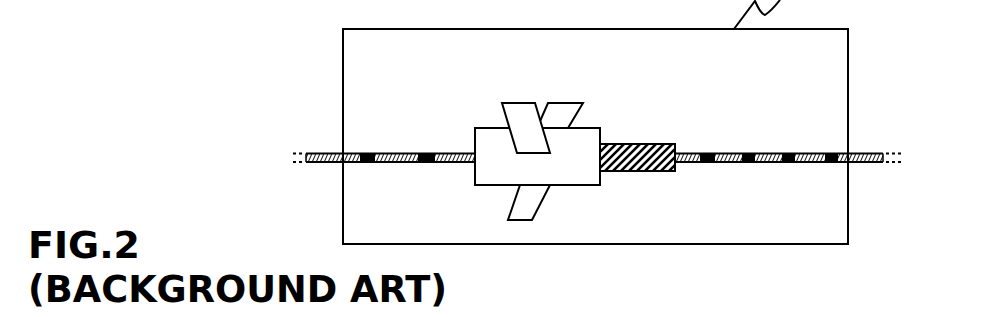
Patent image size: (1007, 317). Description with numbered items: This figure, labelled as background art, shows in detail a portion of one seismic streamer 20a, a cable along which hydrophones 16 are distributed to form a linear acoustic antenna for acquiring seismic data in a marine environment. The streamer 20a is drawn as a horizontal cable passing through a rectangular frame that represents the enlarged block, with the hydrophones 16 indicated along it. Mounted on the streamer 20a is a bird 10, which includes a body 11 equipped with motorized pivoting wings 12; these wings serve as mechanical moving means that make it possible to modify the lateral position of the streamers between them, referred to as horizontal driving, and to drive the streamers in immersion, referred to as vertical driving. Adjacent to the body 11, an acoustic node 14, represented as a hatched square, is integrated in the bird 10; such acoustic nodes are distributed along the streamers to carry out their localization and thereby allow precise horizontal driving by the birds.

The bird 10 is at (542, 96).
The body 11 is at (483, 177).
The motorized pivoting wings 12 is at (517, 111).
The acoustic node 14 is at (641, 171).
The hydrophones 16 is at (792, 155).
The seismic streamer 20a is at (857, 153).